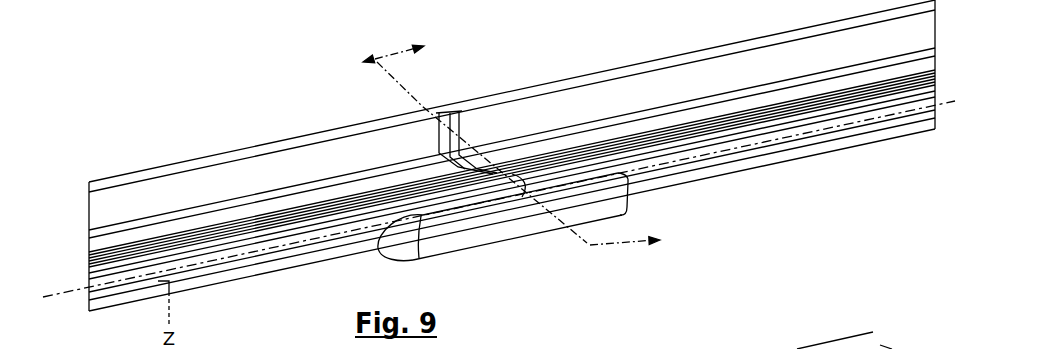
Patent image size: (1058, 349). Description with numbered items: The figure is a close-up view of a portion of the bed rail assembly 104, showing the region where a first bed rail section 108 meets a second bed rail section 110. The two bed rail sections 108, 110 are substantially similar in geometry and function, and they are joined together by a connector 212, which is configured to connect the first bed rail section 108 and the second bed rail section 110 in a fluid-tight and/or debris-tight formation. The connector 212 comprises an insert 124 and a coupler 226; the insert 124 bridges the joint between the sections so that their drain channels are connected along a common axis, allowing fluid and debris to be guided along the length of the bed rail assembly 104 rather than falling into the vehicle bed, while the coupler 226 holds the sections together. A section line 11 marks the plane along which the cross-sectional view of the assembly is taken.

The bed rail assembly 104 is at (256, 64).
The first bed rail section 108 is at (286, 166).
The second bed rail section 110 is at (664, 82).
The insert 124 is at (443, 106).
The connector 212 is at (462, 270).
The coupler 226 is at (502, 240).
The section line 11- 11 is at (501, 160).